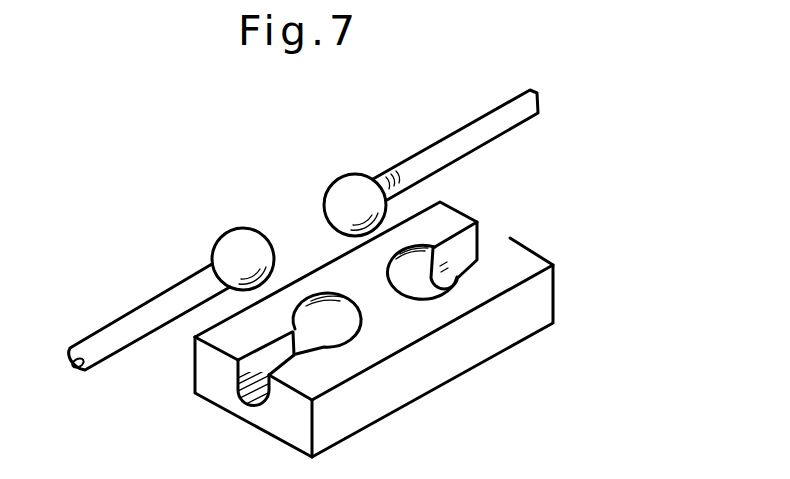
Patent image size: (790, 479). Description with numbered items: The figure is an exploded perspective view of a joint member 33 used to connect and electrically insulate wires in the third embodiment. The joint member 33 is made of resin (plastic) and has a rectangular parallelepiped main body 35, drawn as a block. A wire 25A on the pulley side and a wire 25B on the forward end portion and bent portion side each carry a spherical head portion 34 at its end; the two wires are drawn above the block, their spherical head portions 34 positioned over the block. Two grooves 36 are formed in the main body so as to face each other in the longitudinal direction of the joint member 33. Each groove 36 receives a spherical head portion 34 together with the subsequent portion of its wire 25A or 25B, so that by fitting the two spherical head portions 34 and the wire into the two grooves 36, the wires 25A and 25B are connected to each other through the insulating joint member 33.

The joint member 33 is at (571, 255).
The coupling block 35 is at (448, 363).
The grooves 36 is at (466, 238).
The spherical head portions 34 is at (350, 183).
The wire on the pulley side 25A is at (450, 138).
The wire on the forward end portion and bent portion side 25B is at (113, 330).